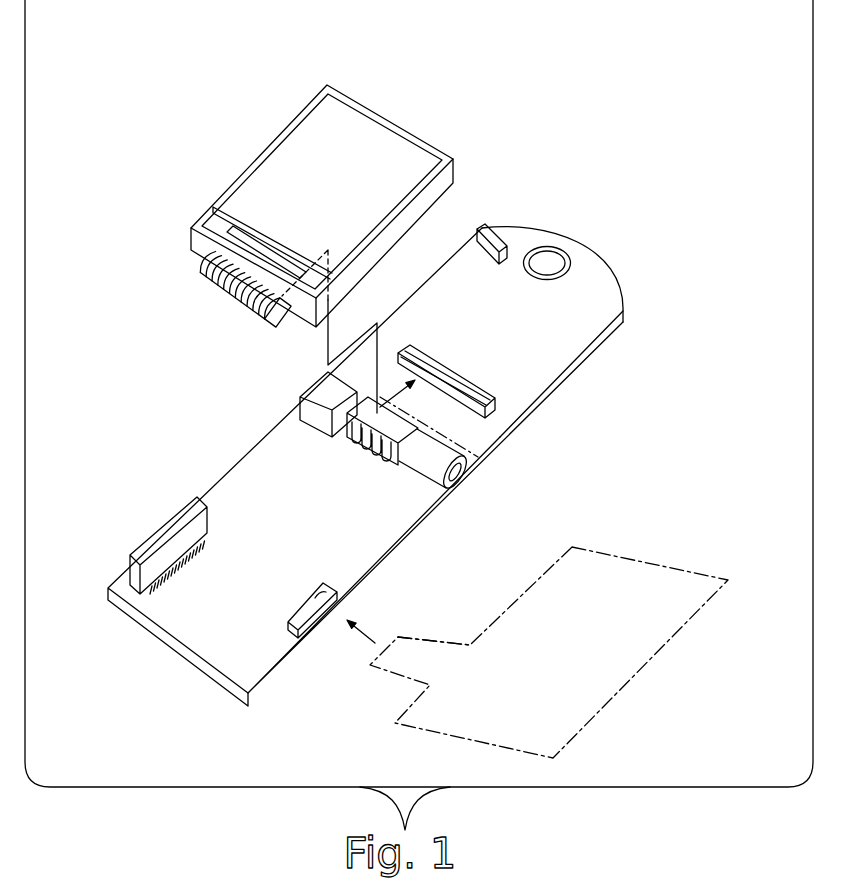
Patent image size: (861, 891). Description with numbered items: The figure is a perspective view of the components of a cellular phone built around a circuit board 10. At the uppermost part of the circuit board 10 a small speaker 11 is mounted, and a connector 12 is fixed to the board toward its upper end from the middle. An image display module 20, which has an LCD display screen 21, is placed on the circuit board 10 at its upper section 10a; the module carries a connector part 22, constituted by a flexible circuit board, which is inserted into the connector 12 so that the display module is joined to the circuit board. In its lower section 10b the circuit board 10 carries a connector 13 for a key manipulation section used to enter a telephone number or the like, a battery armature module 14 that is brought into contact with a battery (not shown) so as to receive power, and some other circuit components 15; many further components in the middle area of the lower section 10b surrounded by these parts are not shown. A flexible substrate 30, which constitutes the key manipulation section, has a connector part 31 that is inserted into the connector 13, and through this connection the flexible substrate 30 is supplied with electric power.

The circuit board 10 is at (414, 463).
The upper section 10a is at (552, 341).
The lower section 10b is at (253, 492).
The small speaker 11 is at (548, 257).
The connector 12 is at (426, 350).
The connector 13 is at (325, 584).
The battery armature module 14 is at (302, 398).
The circuit components 15 is at (445, 452).
The image display module 20 is at (322, 186).
The LCD display screen 21 is at (365, 143).
The connector part 22 is at (288, 327).
The flexible substrate 30 is at (537, 620).
The connector part 31 is at (428, 645).